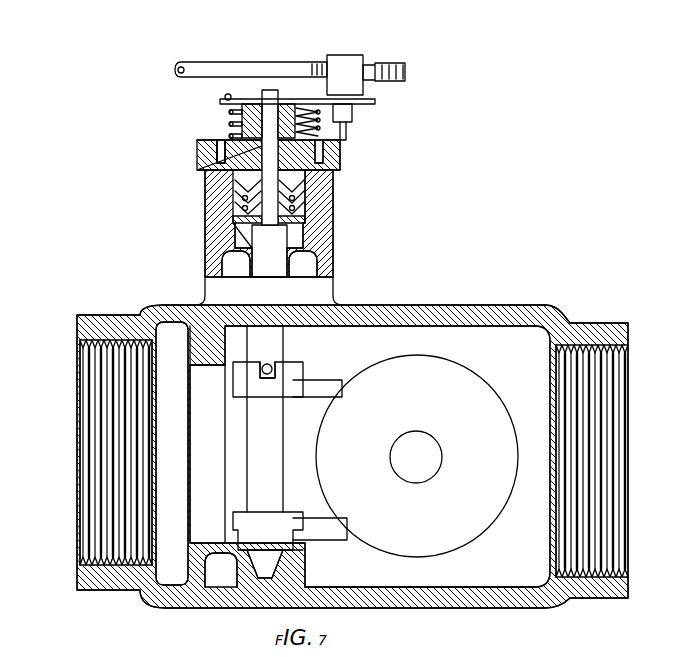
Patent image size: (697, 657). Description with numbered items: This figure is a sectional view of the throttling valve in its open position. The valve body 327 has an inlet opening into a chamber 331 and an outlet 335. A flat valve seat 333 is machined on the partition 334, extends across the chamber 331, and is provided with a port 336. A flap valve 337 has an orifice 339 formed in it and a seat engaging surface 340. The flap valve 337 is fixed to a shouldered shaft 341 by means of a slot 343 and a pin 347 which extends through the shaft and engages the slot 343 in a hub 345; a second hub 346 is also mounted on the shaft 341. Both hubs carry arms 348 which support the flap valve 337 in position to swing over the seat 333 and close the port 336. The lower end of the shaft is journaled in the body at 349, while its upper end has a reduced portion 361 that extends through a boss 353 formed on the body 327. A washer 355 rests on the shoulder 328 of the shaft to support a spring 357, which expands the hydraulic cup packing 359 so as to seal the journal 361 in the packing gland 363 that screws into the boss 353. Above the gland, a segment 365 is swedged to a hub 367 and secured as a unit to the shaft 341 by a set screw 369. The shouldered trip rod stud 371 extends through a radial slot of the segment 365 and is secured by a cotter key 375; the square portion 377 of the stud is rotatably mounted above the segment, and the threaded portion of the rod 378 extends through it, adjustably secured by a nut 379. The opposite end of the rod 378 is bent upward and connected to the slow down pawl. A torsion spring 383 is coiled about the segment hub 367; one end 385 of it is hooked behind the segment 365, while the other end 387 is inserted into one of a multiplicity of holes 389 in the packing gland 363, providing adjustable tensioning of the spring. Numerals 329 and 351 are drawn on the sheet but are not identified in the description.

The valve body 327 is at (550, 312).
The shoulder 328 is at (258, 235).
The right threaded outlet 329 is at (616, 440).
The chamber 331 is at (515, 585).
The valve seat 333 is at (233, 482).
The partition 334 is at (207, 352).
The outlet 335 is at (98, 422).
The port 336 is at (215, 366).
The flap valve 337 is at (472, 385).
The orifice 339 is at (428, 475).
The seat engaging surface 340 is at (458, 378).
The shouldered shaft 341 is at (270, 442).
The slot 343 is at (278, 366).
The hub 345 is at (305, 371).
The second hub 346 is at (280, 512).
The pin 347 is at (266, 363).
The arms 348 is at (295, 397).
The journal 349 is at (285, 568).
The valve stem 351 is at (268, 92).
The boss 353 is at (333, 258).
The washer 355 is at (312, 230).
The spring 357 is at (305, 216).
The hydraulic cup packing 359 is at (312, 182).
The reduced portion 361 is at (205, 198).
The packing gland 363 is at (205, 160).
The segment 365 is at (376, 101).
The hub 367 is at (240, 115).
The set screw 369 is at (308, 128).
The trip rod stud 371 is at (356, 120).
The cotter key 375 is at (353, 115).
The square portion 377 is at (355, 58).
The rod 378 is at (318, 63).
The nut 379 is at (400, 66).
The torsion spring 383 is at (235, 135).
The spring end 385 is at (226, 97).
The spring end 387 is at (323, 163).
The holes 389 is at (213, 175).